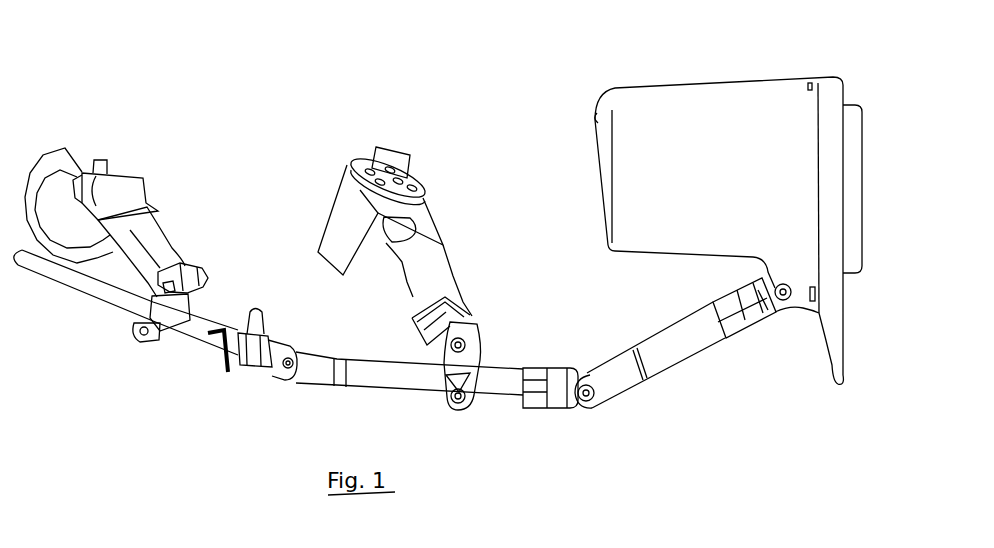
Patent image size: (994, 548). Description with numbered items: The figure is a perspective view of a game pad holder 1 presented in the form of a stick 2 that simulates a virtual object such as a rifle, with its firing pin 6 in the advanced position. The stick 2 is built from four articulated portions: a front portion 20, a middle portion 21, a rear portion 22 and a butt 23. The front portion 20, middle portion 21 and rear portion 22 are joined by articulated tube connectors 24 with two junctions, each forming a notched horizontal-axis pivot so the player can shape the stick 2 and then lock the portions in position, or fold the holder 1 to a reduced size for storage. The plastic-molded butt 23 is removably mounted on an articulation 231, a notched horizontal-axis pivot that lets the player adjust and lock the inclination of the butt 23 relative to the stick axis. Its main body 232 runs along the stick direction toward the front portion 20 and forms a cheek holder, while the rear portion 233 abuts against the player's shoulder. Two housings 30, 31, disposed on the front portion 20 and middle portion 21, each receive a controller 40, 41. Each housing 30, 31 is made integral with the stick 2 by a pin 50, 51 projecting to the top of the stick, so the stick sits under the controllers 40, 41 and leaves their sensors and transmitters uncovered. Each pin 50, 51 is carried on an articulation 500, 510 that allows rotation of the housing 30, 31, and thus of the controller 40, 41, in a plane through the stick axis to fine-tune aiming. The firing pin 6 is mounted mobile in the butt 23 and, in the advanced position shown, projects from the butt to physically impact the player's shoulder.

The game pad holder 1 is at (244, 96).
The stick 2 is at (395, 396).
The front portion 20 is at (96, 290).
The middle portion 21 is at (375, 359).
The rear portion 22 is at (677, 360).
The butt 23 is at (706, 84).
The articulation 231 is at (782, 300).
The main body 232 is at (670, 232).
The rear portion 233 is at (835, 315).
The articulated tube connector 24 is at (296, 380).
The housing 30 is at (153, 245).
The housing 31 is at (441, 278).
The controller 40 is at (114, 183).
The controller 41 is at (418, 207).
The pin 50 is at (190, 267).
The articulation 500 is at (200, 297).
The pin 51 is at (474, 322).
The articulation 510 is at (480, 352).
The firing pin 6 is at (860, 186).